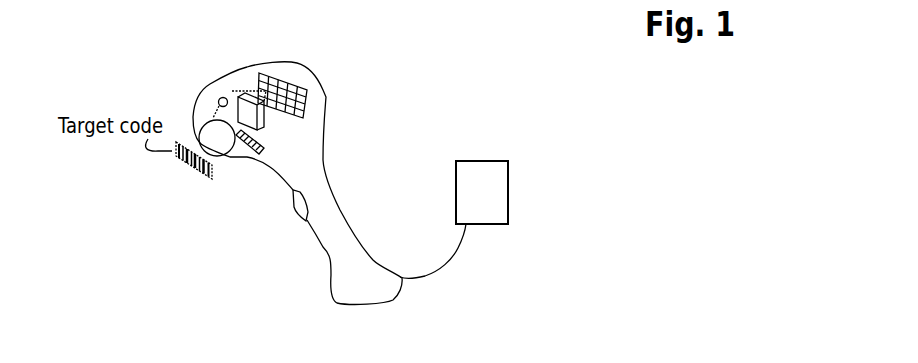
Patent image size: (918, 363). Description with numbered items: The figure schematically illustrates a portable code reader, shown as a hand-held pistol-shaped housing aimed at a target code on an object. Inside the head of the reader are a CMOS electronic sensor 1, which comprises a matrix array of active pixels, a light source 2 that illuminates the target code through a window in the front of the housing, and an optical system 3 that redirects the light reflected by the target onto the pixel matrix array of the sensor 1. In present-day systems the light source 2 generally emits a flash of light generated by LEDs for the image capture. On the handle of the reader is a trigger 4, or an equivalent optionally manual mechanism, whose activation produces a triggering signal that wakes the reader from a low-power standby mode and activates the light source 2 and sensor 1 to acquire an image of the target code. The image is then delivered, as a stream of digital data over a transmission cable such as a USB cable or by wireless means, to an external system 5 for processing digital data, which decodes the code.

The CMOS electronic sensor 1 is at (327, 93).
The light source 2 is at (263, 152).
The optical system 3 is at (235, 92).
The trigger 4 is at (292, 213).
The external system 5 is at (508, 181).